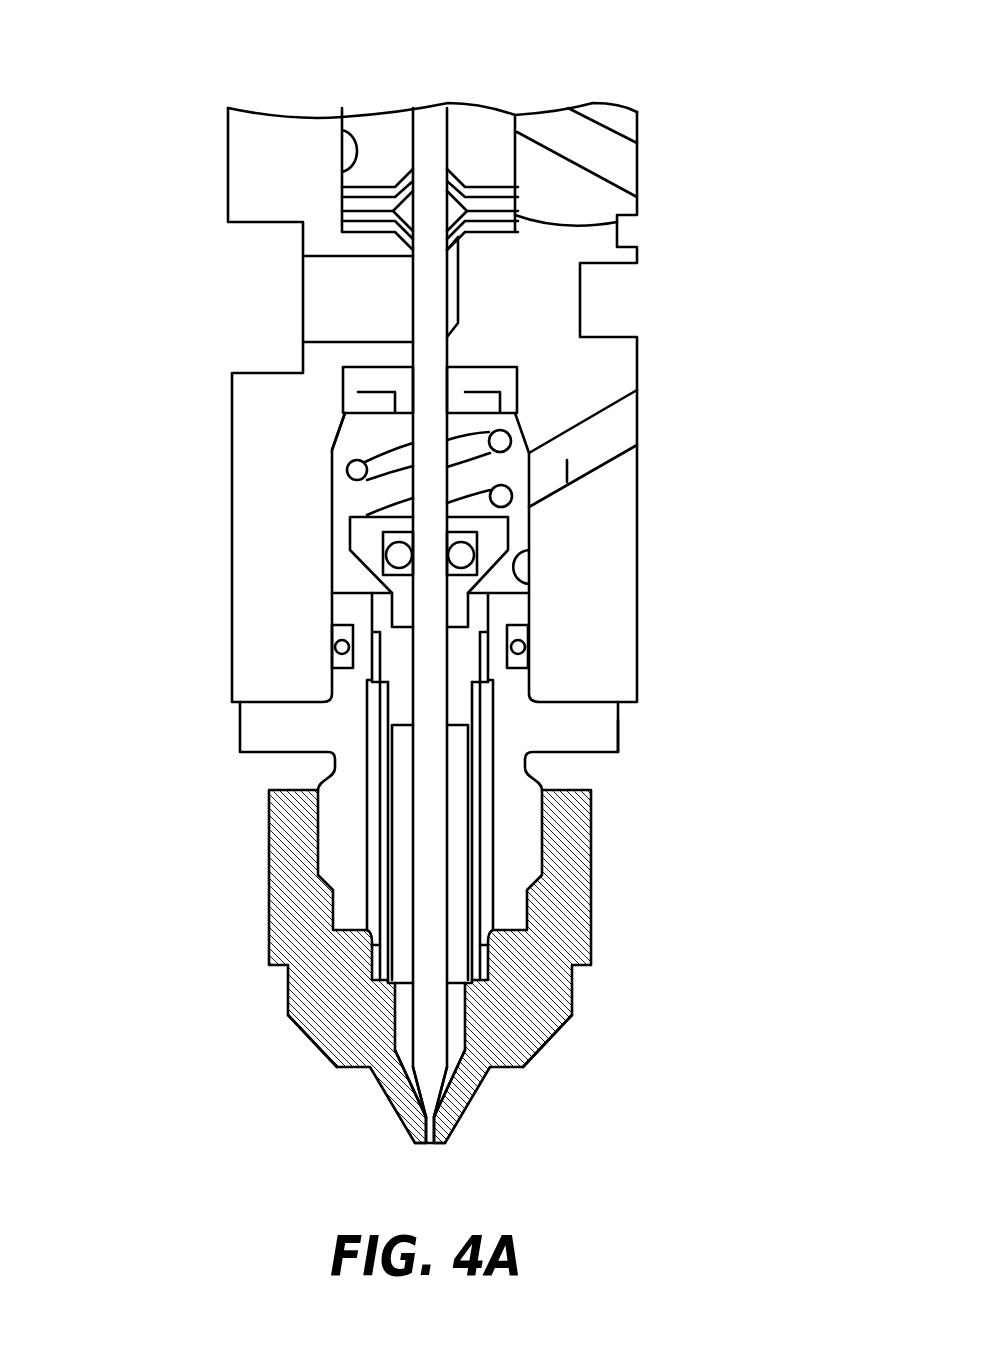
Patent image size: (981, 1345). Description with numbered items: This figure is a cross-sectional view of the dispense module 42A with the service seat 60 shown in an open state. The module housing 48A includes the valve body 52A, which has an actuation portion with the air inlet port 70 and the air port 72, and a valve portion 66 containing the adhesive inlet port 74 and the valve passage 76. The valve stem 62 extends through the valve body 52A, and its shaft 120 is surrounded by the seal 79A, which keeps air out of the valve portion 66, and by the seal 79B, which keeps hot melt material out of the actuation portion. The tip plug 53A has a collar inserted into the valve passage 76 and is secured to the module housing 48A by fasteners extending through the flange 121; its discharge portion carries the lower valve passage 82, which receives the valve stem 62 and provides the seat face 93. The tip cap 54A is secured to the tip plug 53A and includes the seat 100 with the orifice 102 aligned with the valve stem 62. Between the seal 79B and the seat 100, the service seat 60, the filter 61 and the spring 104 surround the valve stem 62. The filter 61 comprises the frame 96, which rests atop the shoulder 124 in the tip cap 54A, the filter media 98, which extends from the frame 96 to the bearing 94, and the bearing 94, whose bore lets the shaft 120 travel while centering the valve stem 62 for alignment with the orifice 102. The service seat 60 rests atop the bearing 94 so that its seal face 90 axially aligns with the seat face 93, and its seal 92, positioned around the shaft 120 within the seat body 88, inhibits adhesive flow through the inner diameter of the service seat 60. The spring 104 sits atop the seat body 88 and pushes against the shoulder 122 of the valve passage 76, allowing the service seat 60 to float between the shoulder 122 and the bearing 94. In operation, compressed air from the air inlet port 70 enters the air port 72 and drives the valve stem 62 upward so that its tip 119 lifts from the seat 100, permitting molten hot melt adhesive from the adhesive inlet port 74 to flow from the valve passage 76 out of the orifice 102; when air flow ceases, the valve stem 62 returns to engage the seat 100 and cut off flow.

The dispense module 42A is at (116, 95).
The air inlet port 70 is at (603, 152).
The air port 72 is at (343, 171).
The seal 79A is at (632, 218).
The seal 79B is at (510, 375).
The shoulder 122 is at (345, 425).
The spring 104 is at (385, 457).
The seat body 88 is at (367, 538).
The module housing 48A is at (216, 513).
The valve body 52A is at (613, 510).
The service seat 60 is at (350, 557).
The adhesive inlet port 74 is at (567, 468).
The valve passage 76 is at (529, 584).
The seat face 93 is at (372, 587).
The seal 92 is at (397, 594).
The seal face 90 is at (487, 602).
The bearing 94 is at (395, 663).
The tip plug 53A is at (612, 702).
The flange 121 is at (626, 720).
The valve portion 66 is at (214, 699).
The filter 61 is at (386, 710).
The shaft 120 is at (425, 792).
The valve stem 62 is at (442, 866).
The filter media 98 is at (388, 810).
The tip cap 54A is at (586, 910).
The lower valve passage 82 is at (367, 905).
The shoulder 124 is at (468, 985).
The frame 96 is at (380, 977).
The seat 100 is at (410, 1096).
The tip 119 is at (428, 1080).
The orifice 102 is at (425, 1130).